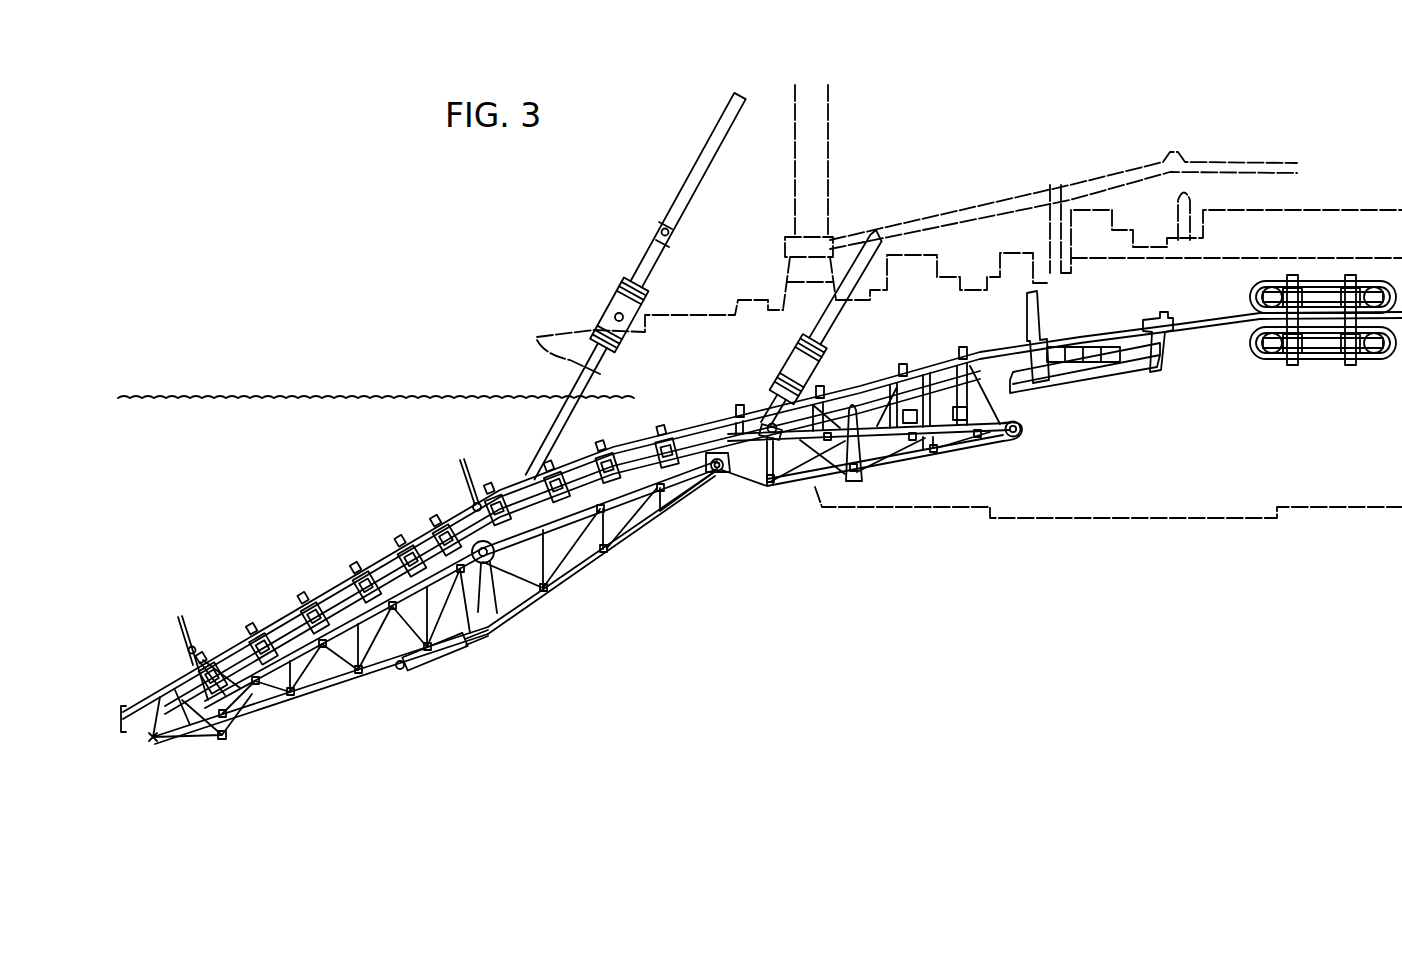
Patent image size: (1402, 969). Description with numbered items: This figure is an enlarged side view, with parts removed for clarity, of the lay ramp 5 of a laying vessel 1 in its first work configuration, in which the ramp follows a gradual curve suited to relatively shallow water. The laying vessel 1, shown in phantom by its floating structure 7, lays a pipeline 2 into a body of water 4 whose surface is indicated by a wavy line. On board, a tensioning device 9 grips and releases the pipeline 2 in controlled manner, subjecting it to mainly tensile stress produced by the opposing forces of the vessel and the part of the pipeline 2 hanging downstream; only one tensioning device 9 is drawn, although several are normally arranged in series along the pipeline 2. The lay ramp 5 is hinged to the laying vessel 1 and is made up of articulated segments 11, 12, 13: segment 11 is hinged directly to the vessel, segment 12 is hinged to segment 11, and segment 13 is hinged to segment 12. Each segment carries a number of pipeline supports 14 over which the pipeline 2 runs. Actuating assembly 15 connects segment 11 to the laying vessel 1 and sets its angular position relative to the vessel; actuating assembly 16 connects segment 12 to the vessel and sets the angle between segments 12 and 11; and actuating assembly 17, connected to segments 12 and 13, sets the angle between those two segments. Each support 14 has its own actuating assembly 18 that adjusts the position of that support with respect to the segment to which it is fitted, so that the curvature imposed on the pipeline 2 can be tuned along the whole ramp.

The laying vessel 1 is at (1031, 144).
The pipeline 2 is at (142, 710).
The body of water 4 is at (279, 446).
The lay ramp 5 is at (473, 453).
The floating structure 7 is at (1140, 442).
The tensioning device 9 is at (1317, 372).
The segment 11 is at (885, 465).
The segment 12 is at (637, 532).
The segment 13 is at (273, 715).
The pipeline support 14 is at (213, 645).
The actuating assembly 15 is at (839, 342).
The actuating assembly 16 is at (648, 203).
The actuating assembly 17 is at (454, 658).
The actuating assembly 18 is at (263, 720).